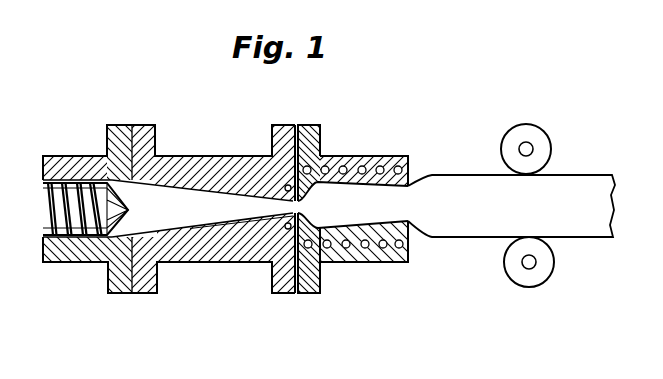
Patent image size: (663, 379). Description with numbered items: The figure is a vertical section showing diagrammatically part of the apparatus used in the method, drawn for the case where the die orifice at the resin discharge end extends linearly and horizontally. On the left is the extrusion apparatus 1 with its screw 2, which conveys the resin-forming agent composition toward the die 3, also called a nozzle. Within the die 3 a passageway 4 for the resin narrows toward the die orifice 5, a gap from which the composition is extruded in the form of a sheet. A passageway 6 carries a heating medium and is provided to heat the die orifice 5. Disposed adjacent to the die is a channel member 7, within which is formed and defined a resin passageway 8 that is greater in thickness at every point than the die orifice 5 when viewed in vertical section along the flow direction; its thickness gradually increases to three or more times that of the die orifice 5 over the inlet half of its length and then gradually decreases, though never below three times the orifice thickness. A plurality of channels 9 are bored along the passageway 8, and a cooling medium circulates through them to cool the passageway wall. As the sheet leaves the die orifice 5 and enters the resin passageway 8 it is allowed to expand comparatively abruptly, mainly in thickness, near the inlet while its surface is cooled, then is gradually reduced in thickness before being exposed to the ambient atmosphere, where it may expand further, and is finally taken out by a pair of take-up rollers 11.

The extrusion apparatus 1 is at (127, 275).
The screw 2 is at (65, 240).
The die 3 is at (184, 250).
The passageway for resin within the die 4 is at (178, 200).
The die orifice 5 is at (240, 262).
The heating medium passageway 6 is at (278, 252).
The channel member 7 is at (308, 262).
The resin passageway 8 is at (347, 212).
The cooling channels 9 is at (400, 250).
The roller 11 is at (537, 262).